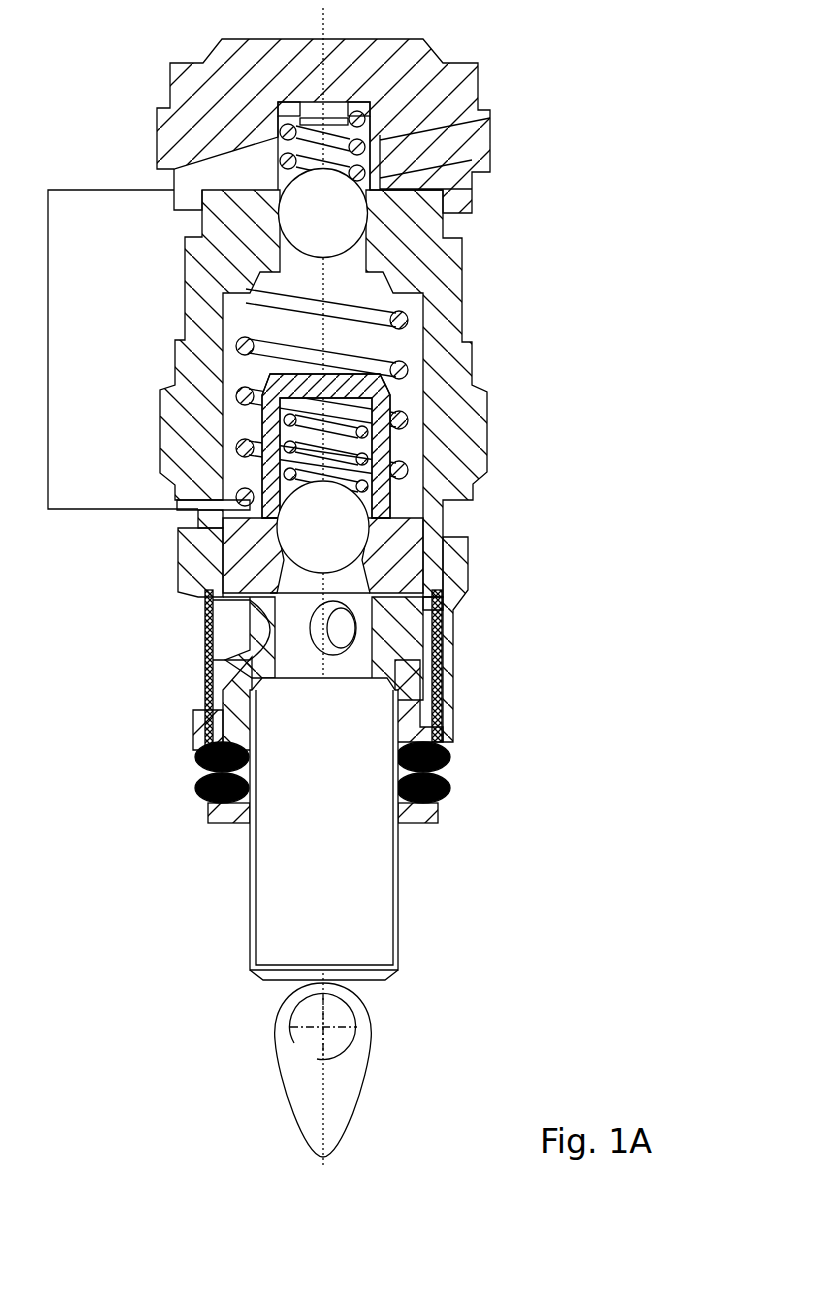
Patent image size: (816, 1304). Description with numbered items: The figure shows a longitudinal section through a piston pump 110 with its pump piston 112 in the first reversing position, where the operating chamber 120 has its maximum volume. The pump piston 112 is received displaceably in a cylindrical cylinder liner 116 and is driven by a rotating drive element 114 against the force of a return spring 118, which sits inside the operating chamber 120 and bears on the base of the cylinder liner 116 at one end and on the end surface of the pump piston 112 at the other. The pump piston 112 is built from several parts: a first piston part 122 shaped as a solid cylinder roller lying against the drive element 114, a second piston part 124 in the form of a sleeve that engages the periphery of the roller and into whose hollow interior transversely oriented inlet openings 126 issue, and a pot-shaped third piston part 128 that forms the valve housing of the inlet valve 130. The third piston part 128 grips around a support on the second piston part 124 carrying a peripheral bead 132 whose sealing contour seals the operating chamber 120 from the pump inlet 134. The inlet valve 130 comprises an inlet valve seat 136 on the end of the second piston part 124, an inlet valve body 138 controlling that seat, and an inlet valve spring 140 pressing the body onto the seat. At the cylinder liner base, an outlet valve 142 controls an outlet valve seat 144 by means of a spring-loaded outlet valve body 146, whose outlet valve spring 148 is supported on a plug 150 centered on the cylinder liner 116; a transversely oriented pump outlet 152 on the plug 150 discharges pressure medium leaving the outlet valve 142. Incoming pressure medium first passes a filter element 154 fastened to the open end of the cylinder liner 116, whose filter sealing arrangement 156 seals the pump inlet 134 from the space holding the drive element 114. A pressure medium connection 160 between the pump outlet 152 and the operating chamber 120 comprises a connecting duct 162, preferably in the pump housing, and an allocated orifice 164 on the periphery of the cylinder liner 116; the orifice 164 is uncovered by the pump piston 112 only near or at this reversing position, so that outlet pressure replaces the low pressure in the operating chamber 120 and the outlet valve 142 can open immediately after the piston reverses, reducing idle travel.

The piston pump 110 is at (605, 72).
The pump piston 112 is at (225, 662).
The drive element 114 is at (357, 1050).
The cylinder liner 116 is at (455, 275).
The return spring 118 is at (423, 377).
The operating chamber 120 is at (412, 335).
The first piston part 122 is at (383, 895).
The second piston part 124 is at (240, 578).
The inlet openings 126 is at (355, 620).
The third piston part 128 is at (423, 447).
The inlet valve 130 is at (255, 468).
The peripheral bead 132 is at (413, 562).
The pump inlet 134 is at (218, 633).
The inlet valve seat 136 is at (352, 547).
The inlet valve body 138 is at (348, 506).
The inlet valve spring 140 is at (262, 425).
The outlet valve 142 is at (382, 176).
The outlet valve seat 144 is at (348, 202).
The outlet valve body 146 is at (445, 193).
The outlet valve spring 148 is at (378, 148).
The plug 150 is at (473, 92).
The pump outlet 152 is at (185, 192).
The filter element 154 is at (440, 658).
The filter sealing arrangement 156 is at (448, 795).
The pressure medium connection 160 is at (72, 190).
The connecting duct 162 is at (197, 516).
The orifice 164 is at (235, 507).